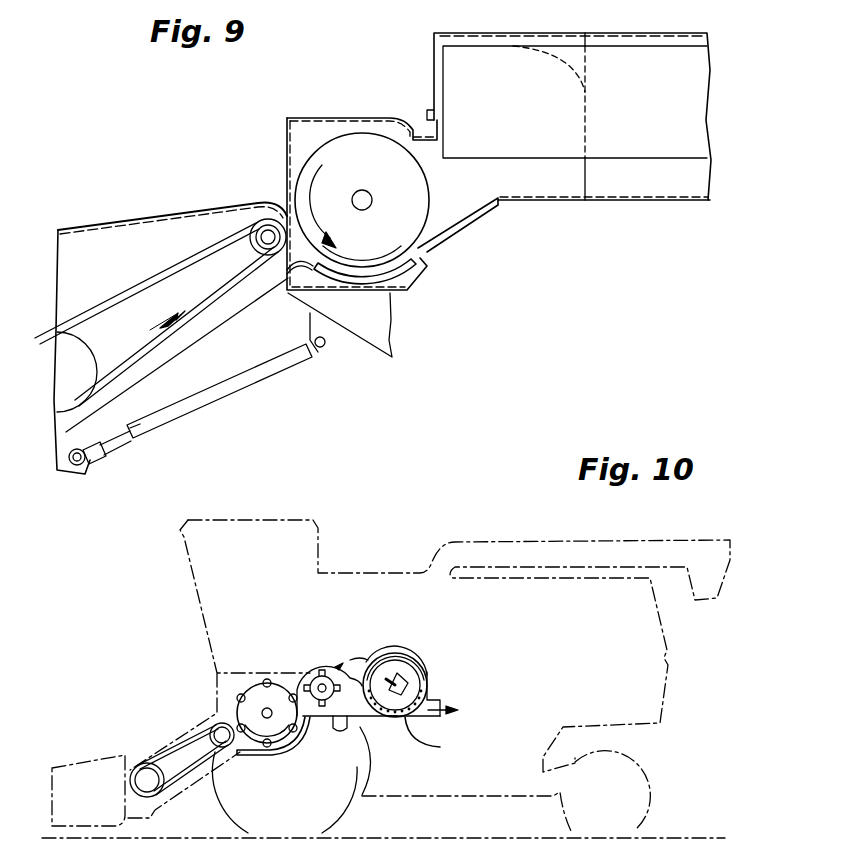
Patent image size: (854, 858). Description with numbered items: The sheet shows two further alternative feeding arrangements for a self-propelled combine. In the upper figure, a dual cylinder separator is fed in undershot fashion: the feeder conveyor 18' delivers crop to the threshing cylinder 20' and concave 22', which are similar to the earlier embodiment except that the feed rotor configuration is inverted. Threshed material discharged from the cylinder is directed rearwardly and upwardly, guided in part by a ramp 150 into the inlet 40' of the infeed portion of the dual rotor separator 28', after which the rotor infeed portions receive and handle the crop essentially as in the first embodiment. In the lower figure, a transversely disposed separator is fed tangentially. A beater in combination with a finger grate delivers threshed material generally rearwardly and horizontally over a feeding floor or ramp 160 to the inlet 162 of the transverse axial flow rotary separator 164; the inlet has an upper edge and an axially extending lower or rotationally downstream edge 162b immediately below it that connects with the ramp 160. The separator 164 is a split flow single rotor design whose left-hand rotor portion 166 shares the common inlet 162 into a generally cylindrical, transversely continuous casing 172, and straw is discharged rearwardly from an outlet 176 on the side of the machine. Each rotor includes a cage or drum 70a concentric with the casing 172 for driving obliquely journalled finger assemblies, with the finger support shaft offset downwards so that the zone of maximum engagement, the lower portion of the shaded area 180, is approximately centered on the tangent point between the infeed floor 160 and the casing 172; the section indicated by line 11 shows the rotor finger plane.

In FIG. 9, the feeder conveyor 18' is at (213, 338).
In FIG. 9, the threshing cylinder 20' is at (362, 200).
In FIG. 9, the concave 22' is at (386, 283).
In FIG. 9, the dual rotor separator 28' is at (569, 145).
In FIG. 9, the inlet 40' is at (576, 186).
In FIG. 9, the ramp 150 is at (468, 217).
In FIG. 10, the section line 11 is at (382, 752).
In FIG. 10, the cage or drum 70a is at (398, 655).
In FIG. 10, the feeding floor or ramp 160 is at (371, 704).
In FIG. 10, the inlet 162 is at (339, 645).
In FIG. 10, the lower or rotationally downstream edge 162b is at (362, 795).
In FIG. 10, the transverse axial flow rotary separator 164 is at (432, 622).
In FIG. 10, the left-hand rotor portion 166 is at (354, 643).
In FIG. 10, the casing 172 is at (423, 655).
In FIG. 10, the outlet 176 is at (433, 723).
In FIG. 10, the shaded area 180 is at (397, 716).